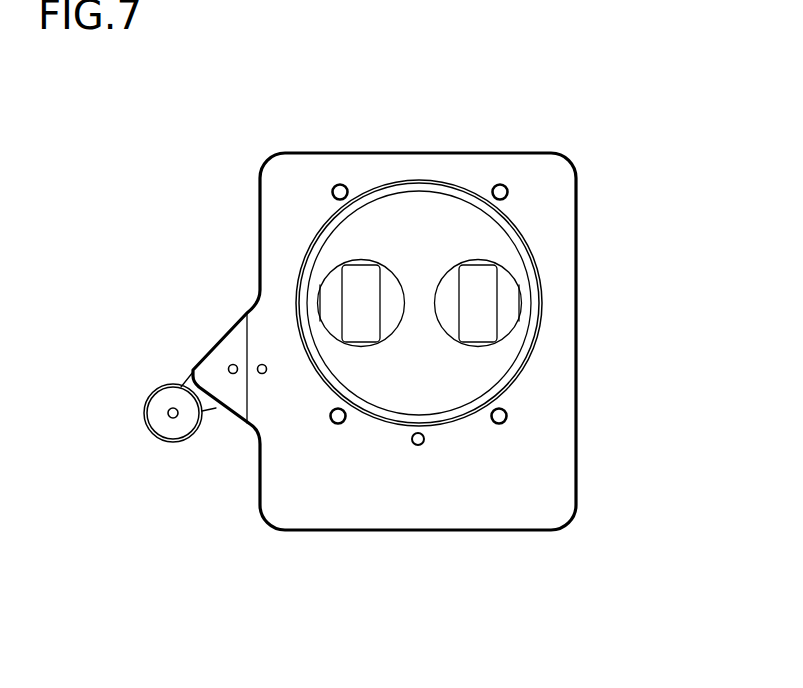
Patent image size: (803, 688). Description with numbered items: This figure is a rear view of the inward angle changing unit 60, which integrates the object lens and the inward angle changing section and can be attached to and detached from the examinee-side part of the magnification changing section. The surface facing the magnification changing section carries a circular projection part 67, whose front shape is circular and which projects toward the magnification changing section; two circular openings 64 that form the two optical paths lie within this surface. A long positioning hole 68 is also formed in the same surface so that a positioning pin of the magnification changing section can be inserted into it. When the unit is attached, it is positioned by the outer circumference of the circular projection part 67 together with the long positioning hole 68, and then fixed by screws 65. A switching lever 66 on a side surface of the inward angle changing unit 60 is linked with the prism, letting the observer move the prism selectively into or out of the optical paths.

The inward angle changing unit 60 is at (488, 144).
The circular openings 64 is at (334, 299).
The screws 65 is at (340, 183).
The switching lever 66 is at (173, 424).
The circular projection part 67 is at (533, 338).
The long positioning hole 68 is at (425, 443).